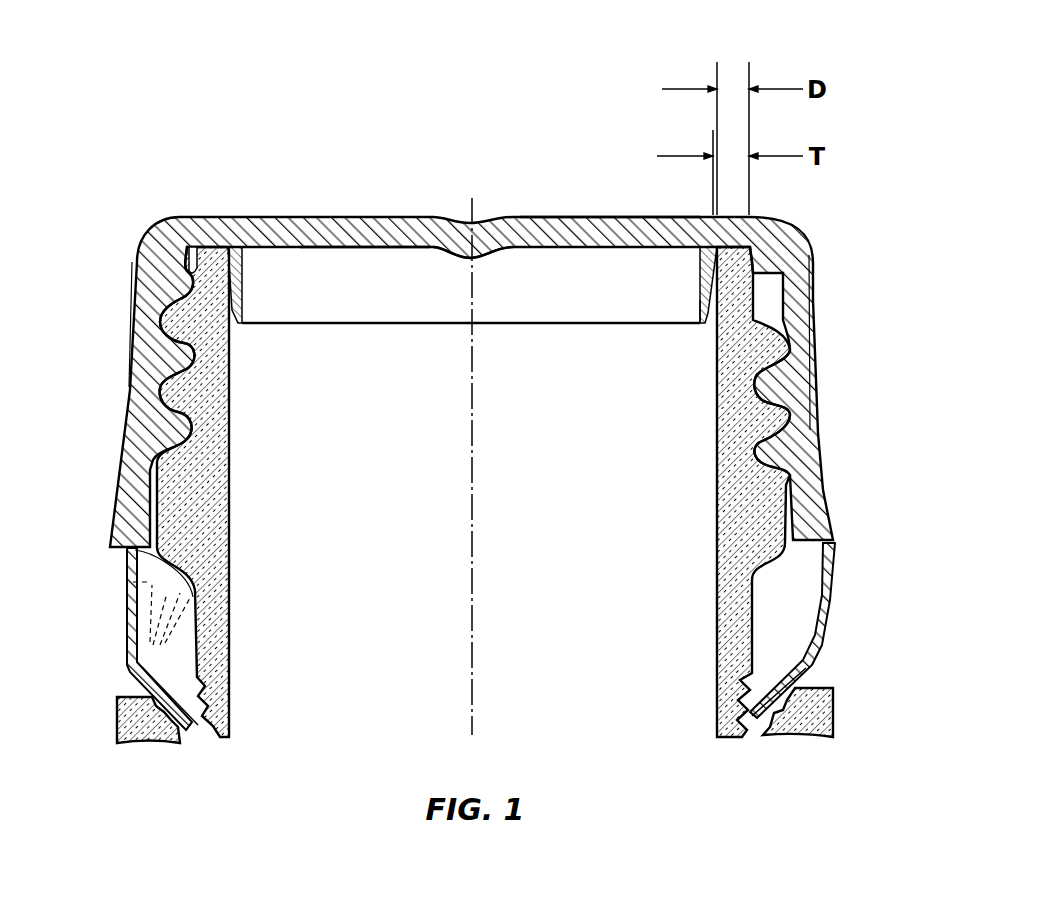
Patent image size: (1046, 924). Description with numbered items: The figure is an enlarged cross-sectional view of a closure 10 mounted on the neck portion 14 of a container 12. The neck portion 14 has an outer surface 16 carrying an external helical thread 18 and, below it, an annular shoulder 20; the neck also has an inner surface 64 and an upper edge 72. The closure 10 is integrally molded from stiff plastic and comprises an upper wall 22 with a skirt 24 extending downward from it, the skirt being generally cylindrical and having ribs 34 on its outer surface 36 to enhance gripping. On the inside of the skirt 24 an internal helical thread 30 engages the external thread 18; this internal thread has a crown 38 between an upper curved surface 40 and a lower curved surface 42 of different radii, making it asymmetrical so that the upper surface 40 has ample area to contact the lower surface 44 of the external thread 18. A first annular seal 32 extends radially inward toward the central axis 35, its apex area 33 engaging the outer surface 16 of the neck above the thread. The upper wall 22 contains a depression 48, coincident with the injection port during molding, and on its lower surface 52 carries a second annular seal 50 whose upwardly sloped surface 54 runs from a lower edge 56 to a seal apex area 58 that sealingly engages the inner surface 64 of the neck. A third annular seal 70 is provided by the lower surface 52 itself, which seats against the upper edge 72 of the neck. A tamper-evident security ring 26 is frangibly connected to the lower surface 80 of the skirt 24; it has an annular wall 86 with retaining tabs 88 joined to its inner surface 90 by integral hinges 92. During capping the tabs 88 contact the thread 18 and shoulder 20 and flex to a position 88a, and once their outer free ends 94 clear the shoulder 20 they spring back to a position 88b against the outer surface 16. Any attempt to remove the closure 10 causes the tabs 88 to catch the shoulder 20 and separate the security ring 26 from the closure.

The closure 10 is at (558, 103).
The container 12 is at (835, 705).
The neck portion 14 is at (733, 633).
The outer surface of the neck portion 16 is at (753, 623).
The external helical thread 18 is at (770, 317).
The annular shoulder 20 is at (180, 460).
The upper wall 22 is at (562, 227).
The skirt 24 is at (127, 480).
The tamper-evident security ring 26 is at (128, 623).
The internal helical thread 30 is at (180, 420).
The first annular seal 32 is at (187, 277).
The apex area of the first annular seal 33 is at (755, 270).
The ribs 34 is at (135, 320).
The central axis 35 is at (472, 493).
The outer surface of the skirt 36 is at (120, 510).
The crown 38 is at (718, 462).
The upper curved surface 40 is at (787, 360).
The lower curved surface 42 is at (757, 460).
The lower surface of the external thread 44 is at (765, 365).
The depression 48 is at (483, 237).
The second annular seal 50 is at (233, 290).
The lower surface of the upper wall 52 is at (370, 248).
The upwardly sloped surface 54 is at (707, 307).
The lower edge 56 is at (370, 325).
The seal apex area 58 is at (718, 277).
The inner surface of the neck portion 64 is at (717, 545).
The third annular seal 70 is at (173, 225).
The upper edge of the neck portion 72 is at (217, 247).
The lower surface of the skirt 80 is at (825, 543).
The annular wall 86 is at (822, 633).
The retaining tabs 88 is at (150, 677).
The flexed position of the retaining tabs 88a is at (150, 580).
The sprung-back position of the retaining tabs 88b is at (140, 550).
The inner surface of the annular wall 90 is at (769, 596).
The integral hinges 92 is at (820, 657).
The outer free end 94 is at (192, 727).